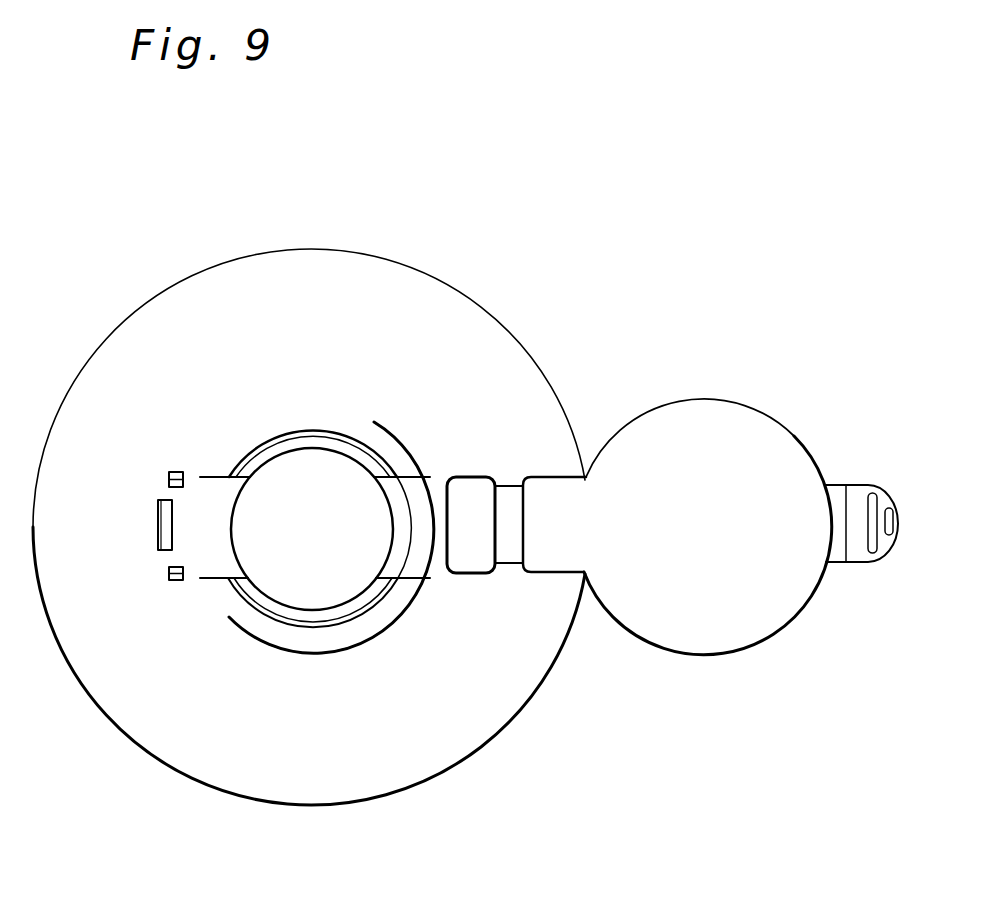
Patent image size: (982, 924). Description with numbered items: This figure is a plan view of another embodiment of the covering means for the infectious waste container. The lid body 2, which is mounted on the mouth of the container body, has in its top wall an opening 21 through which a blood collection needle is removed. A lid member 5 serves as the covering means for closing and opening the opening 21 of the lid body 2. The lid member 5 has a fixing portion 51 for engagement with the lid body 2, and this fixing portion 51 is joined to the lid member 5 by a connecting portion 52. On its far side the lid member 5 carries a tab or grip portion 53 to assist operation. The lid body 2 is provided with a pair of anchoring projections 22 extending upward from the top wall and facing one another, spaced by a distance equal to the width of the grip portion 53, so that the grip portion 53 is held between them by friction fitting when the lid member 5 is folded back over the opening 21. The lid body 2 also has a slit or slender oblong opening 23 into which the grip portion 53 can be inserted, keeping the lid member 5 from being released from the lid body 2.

The lid body 2 is at (172, 317).
The opening 21 is at (340, 448).
The anchoring projections 22 is at (175, 581).
The slit or slender oblong opening 23 is at (158, 513).
The lid member 5 is at (685, 397).
The fixing portion 51 is at (467, 477).
The connecting portion 52 is at (508, 567).
The tab or grip portion 53 is at (847, 485).